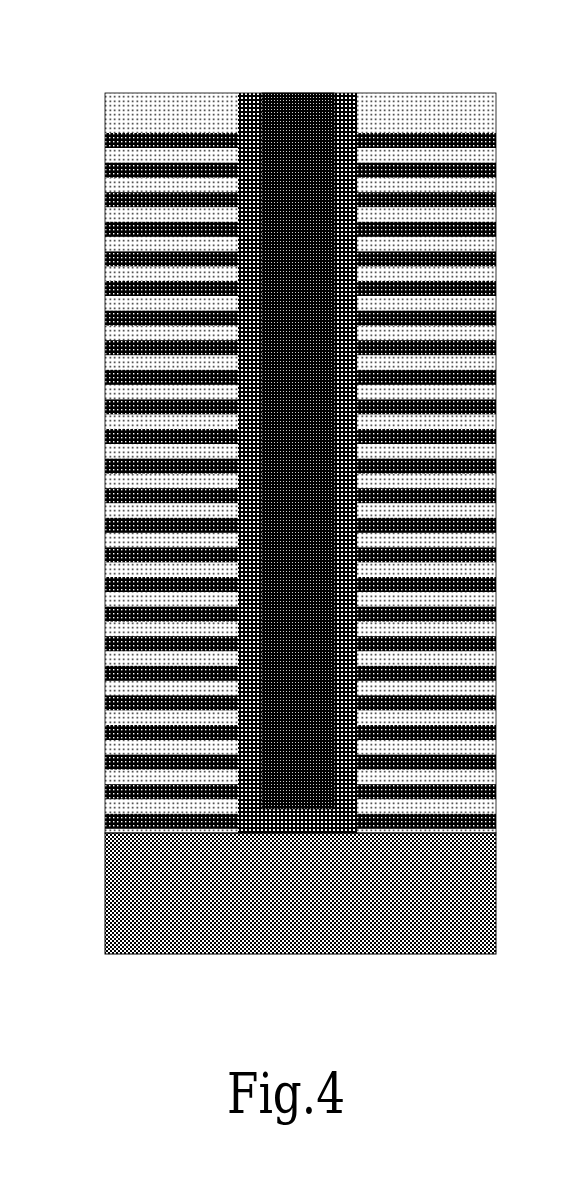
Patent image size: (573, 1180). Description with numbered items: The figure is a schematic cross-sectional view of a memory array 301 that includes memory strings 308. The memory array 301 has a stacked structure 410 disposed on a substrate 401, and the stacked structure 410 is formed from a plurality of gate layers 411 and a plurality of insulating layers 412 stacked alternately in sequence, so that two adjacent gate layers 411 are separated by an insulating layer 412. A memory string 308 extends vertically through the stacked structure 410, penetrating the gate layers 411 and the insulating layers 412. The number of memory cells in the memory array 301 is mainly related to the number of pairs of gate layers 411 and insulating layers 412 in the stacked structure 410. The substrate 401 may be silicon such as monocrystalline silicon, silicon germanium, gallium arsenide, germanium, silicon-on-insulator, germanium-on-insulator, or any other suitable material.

The memory array 301 is at (315, 45).
The memory string 308 is at (321, 443).
The substrate 401 is at (342, 923).
The stacked structure 410 is at (105, 133).
The gate layer 411 is at (130, 375).
The insulating layer 412 is at (123, 393).